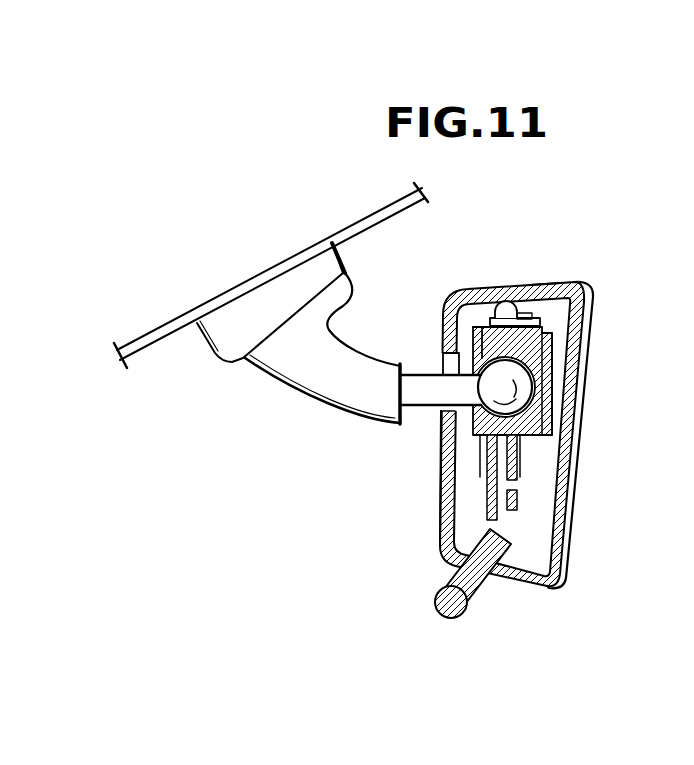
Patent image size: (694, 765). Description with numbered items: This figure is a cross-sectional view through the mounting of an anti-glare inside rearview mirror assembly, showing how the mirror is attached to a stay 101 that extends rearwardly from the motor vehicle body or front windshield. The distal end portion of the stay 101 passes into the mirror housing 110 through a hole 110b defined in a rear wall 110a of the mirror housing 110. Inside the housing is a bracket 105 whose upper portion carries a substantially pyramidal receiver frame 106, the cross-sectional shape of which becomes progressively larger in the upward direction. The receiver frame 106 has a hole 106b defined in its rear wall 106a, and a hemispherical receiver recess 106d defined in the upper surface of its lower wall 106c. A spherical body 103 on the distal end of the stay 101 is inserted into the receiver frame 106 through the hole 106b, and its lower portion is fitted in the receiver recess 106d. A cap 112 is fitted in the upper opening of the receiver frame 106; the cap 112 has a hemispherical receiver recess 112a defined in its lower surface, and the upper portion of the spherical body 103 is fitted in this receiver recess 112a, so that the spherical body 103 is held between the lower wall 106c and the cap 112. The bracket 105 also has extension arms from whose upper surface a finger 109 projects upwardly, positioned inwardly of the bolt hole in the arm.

The stay 101 is at (336, 418).
The spherical body 103 is at (527, 380).
The bracket 105 is at (545, 412).
The receiver frame 106 is at (552, 352).
The rear wall 106a is at (473, 337).
The hole 106b is at (447, 368).
The lower wall 106c is at (480, 437).
The receiver recess 106d is at (537, 435).
The finger 109 is at (496, 302).
The mirror housing 110 is at (582, 279).
The rear wall 110a is at (441, 500).
The hole 110b is at (440, 417).
The cap 112 is at (537, 318).
The receiver recess 112a is at (540, 288).